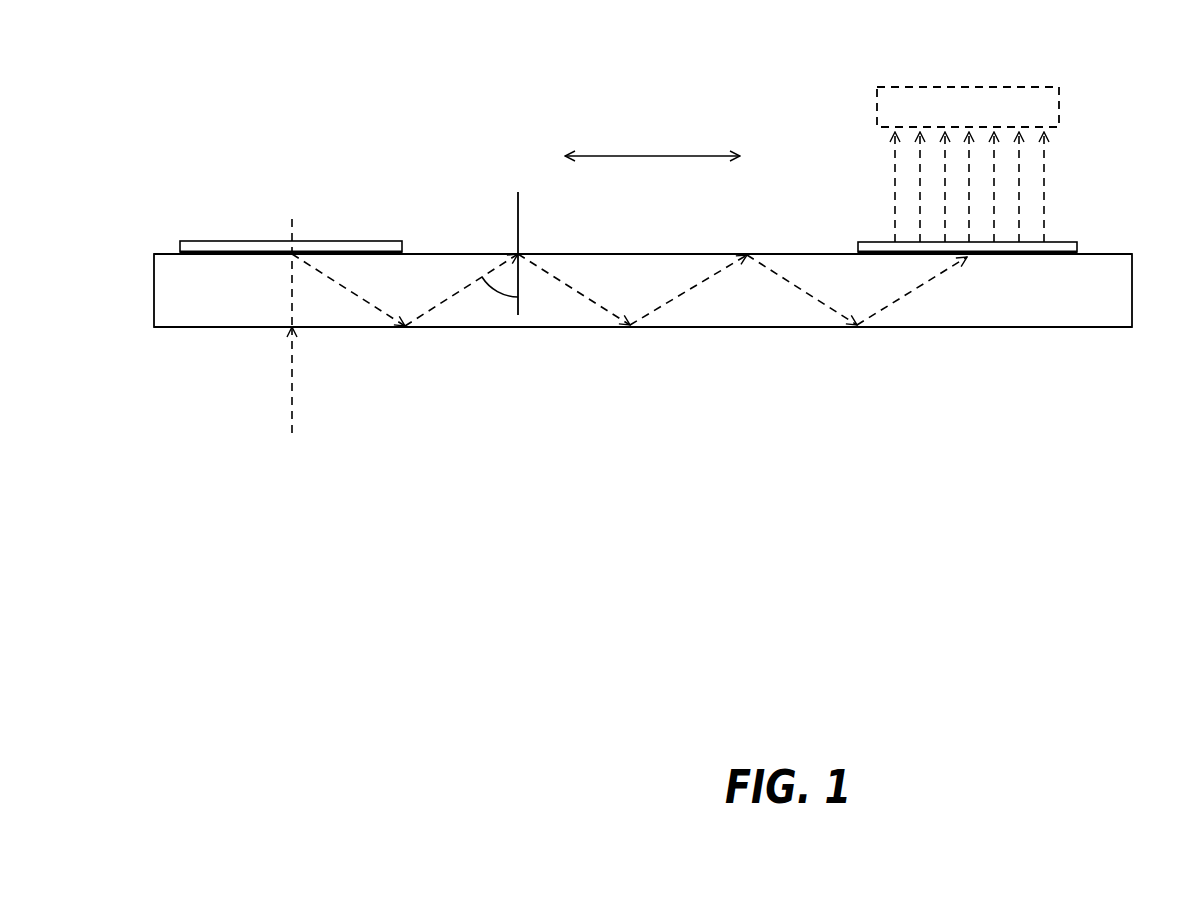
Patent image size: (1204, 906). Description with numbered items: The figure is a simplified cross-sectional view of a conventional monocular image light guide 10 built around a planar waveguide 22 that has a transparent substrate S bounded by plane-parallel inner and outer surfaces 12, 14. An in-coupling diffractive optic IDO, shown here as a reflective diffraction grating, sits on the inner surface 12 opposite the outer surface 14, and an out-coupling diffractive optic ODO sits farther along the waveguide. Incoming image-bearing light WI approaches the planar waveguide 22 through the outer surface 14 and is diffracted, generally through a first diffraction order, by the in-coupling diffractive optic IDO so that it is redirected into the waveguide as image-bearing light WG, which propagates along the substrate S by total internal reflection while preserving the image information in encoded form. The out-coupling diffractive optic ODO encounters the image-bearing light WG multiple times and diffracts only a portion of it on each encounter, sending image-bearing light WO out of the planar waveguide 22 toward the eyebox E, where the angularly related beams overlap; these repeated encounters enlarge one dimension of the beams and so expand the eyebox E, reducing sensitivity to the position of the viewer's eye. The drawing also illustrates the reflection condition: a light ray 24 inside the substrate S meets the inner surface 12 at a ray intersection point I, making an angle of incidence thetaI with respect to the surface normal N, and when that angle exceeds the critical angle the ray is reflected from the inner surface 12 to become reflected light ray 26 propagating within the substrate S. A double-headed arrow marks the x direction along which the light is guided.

The image light guide 10 is at (1056, 474).
The inner surface 12 is at (555, 254).
The outer surface 14 is at (498, 328).
The planar waveguide 22 is at (947, 326).
The light ray 24 is at (445, 295).
The reflected light ray 26 is at (603, 302).
The transparent substrate S is at (1106, 315).
The image-bearing light WG is at (690, 290).
The in-coupling diffractive optic IDO is at (390, 241).
The out-coupling diffractive optic ODO is at (1073, 241).
The image-bearing light WI is at (308, 476).
The image-bearing light WO is at (1048, 188).
The eyebox E is at (968, 87).
The surface normal N is at (520, 217).
The ray intersection point I is at (513, 251).
The angle of incidence thetaI is at (490, 299).
The x direction x is at (630, 152).